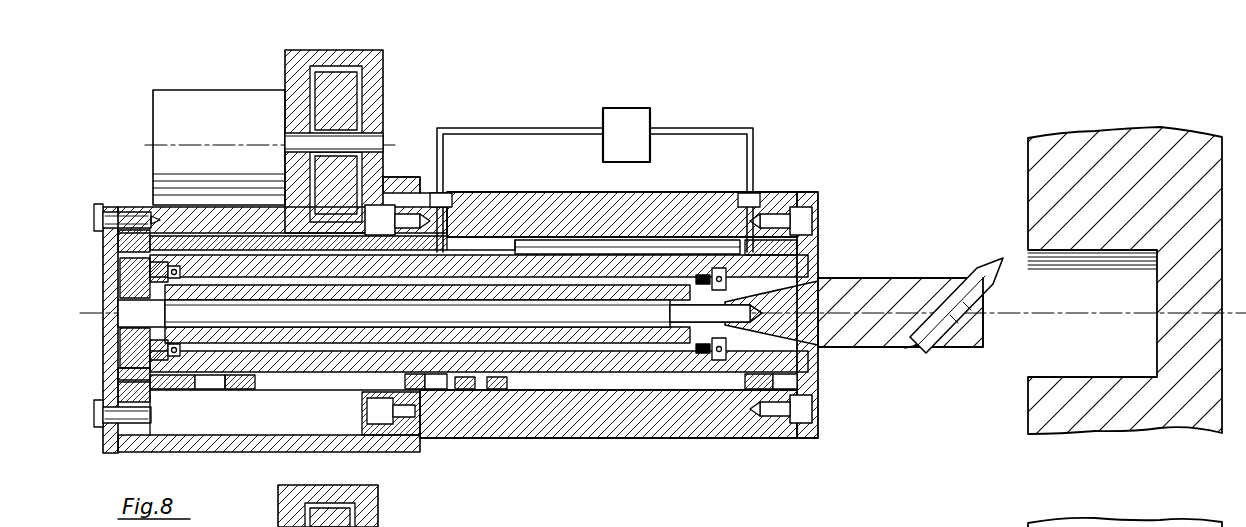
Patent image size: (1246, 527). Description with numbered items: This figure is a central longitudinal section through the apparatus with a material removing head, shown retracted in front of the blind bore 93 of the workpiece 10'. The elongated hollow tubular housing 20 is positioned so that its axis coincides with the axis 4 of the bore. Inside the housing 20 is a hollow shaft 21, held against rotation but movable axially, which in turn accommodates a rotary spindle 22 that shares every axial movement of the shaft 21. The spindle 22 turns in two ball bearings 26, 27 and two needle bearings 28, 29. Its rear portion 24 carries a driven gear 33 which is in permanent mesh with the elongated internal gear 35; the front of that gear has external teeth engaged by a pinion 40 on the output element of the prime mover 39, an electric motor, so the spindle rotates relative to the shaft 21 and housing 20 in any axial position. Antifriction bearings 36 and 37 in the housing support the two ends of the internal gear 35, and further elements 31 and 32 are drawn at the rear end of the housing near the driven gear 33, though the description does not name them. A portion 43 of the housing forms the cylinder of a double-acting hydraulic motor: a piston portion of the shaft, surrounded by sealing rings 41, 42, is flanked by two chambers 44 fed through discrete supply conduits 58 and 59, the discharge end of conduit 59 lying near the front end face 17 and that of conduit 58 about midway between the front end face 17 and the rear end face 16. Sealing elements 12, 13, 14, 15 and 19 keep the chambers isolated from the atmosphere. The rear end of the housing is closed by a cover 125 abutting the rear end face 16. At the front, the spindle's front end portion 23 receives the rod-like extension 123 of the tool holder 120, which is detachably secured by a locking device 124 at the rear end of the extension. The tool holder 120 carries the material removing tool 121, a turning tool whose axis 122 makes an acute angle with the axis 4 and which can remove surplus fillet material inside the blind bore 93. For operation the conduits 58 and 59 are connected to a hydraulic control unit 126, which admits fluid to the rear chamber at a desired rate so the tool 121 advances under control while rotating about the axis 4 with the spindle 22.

The axis 4 is at (1003, 312).
The workpiece 10' is at (1125, 292).
The sealing element 12 is at (413, 392).
The sealing element 13 is at (424, 392).
The sealing element 14 is at (765, 405).
The sealing element 15 is at (782, 395).
The rear end face 16 is at (118, 385).
The front end face 17 is at (822, 200).
The sealing element 19 is at (820, 375).
The housing 20 is at (683, 190).
The hollow shaft 21 is at (643, 262).
The spindle 22 is at (605, 335).
The front end portion 23 is at (825, 288).
The rear portion 24 is at (118, 282).
The ball bearing 26 is at (190, 390).
The ball bearing 27 is at (717, 358).
The needle bearing 28 is at (212, 388).
The needle bearing 29 is at (702, 352).
The bolt 31 is at (101, 418).
The bearing 32 is at (128, 450).
The driven gear 33 is at (118, 253).
The internal gear 35 is at (248, 388).
The antifriction bearing 36 is at (143, 212).
The antifriction bearing 37 is at (352, 400).
The prime mover 39 is at (226, 108).
The pinion 40 is at (397, 175).
The sealing ring 41 is at (467, 392).
The sealing ring 42 is at (498, 392).
The cylinder 43 is at (523, 207).
The chamber 44 is at (563, 247).
The supply conduit 58 is at (440, 200).
The supply conduit 59 is at (748, 193).
The blind bore 93 is at (1120, 262).
The tool holder 120 is at (870, 292).
The material removing tool 121 is at (970, 273).
The axis of the tool 122 is at (907, 348).
The rod-like extension 123 is at (752, 257).
The locking device 124 is at (515, 258).
The cover 125 is at (99, 205).
The hydraulic control unit 126 is at (628, 122).